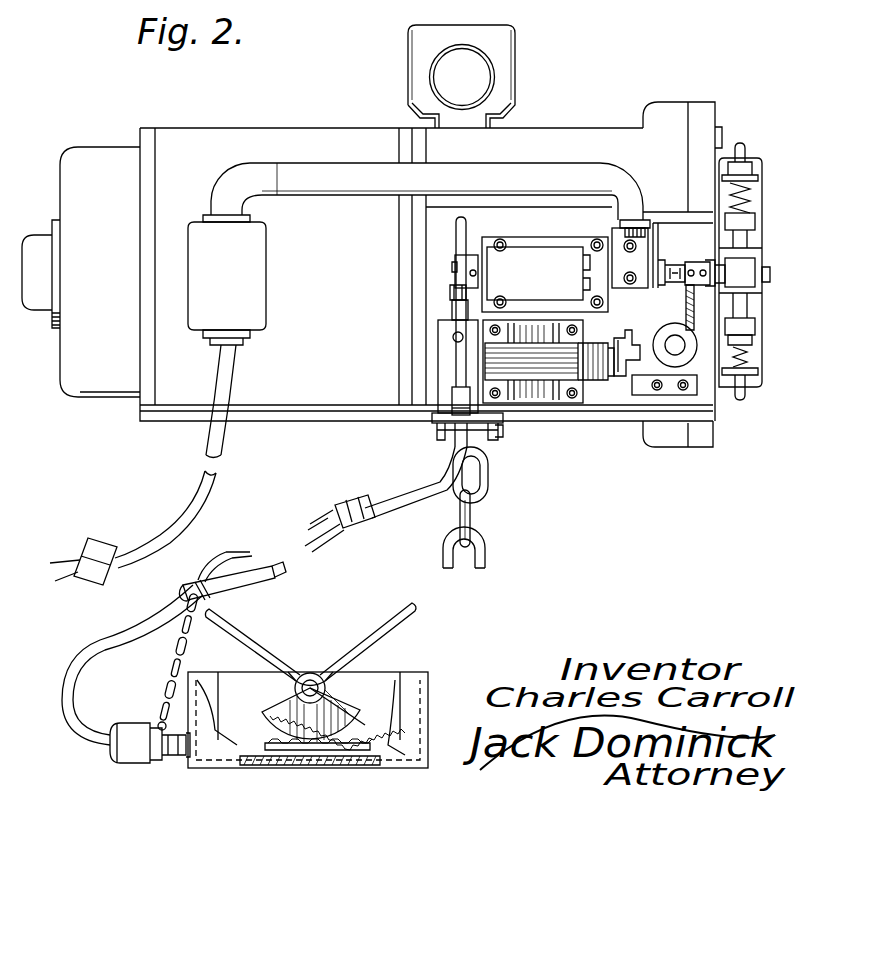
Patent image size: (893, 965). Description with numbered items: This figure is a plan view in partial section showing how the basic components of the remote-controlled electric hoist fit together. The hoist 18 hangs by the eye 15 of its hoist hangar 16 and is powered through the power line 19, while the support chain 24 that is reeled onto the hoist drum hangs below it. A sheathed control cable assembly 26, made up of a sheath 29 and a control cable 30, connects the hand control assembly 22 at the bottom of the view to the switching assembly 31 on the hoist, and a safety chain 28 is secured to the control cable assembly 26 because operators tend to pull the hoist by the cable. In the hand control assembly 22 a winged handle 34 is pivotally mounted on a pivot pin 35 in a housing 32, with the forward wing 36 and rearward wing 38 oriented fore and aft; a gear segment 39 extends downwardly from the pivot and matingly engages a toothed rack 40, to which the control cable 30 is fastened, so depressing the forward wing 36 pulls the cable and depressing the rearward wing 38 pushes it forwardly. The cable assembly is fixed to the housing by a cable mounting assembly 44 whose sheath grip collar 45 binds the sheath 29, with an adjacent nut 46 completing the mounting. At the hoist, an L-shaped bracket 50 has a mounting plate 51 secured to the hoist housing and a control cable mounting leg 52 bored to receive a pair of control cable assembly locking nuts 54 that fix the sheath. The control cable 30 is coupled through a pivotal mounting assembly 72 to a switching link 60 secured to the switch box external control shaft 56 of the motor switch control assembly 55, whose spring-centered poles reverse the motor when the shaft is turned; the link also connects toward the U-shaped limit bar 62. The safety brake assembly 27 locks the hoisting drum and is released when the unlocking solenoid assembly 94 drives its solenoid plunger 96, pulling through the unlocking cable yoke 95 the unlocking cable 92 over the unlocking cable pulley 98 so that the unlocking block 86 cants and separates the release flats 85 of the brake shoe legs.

The eye 15 is at (478, 77).
The hoist hangar 16 is at (475, 38).
The hoist 18 is at (225, 128).
The power line 19 is at (128, 540).
The hand control assembly 22 is at (298, 638).
The support chain 24 is at (476, 528).
The control cable assembly 26 is at (348, 522).
The safety brake assembly 27 is at (762, 190).
The safety chain 28 is at (230, 565).
The sheath 29 is at (322, 540).
The control cable 30 is at (458, 358).
The switching assembly 31 is at (445, 310).
The housing 32 is at (425, 672).
The winged handle 34 is at (315, 660).
The pivot pin 35 is at (296, 686).
The forward wing 36 is at (266, 636).
The rearward wing 38 is at (368, 628).
The gear segment 39 is at (355, 705).
The toothed rack 40 is at (360, 735).
The cable mounting assembly 44 is at (158, 705).
The sheath grip collar 45 is at (122, 735).
The nut 46 is at (170, 760).
The L-shaped bracket 50 is at (433, 418).
The mounting plate 51 is at (440, 373).
The control cable mounting leg 52 is at (483, 415).
The control cable assembly locking nuts 54 is at (452, 410).
The motor switch control assembly 55 is at (530, 263).
The switch box external control shaft 56 is at (470, 257).
The switching link 60 is at (455, 265).
The limit bar 62 is at (437, 435).
The pivotal mounting assembly 72 is at (450, 290).
The release flats 85 is at (752, 249).
The unlocking block 86 is at (745, 275).
The unlocking cable 92 is at (688, 305).
The unlocking solenoid assembly 94 is at (553, 392).
The unlocking cable yoke 95 is at (620, 372).
The solenoid plunger 96 is at (598, 380).
The unlocking cable pulley 98 is at (695, 352).